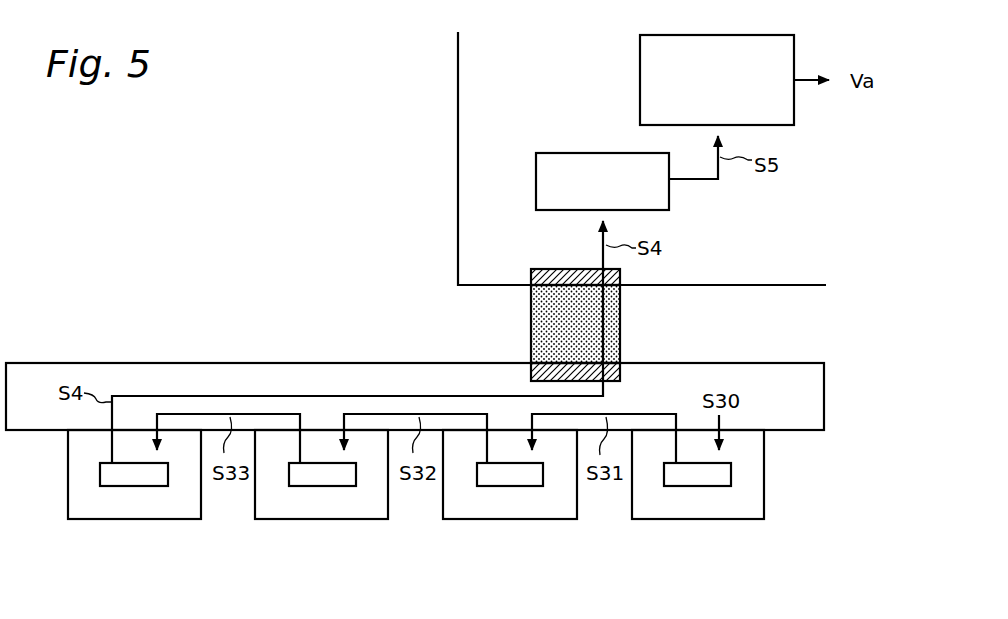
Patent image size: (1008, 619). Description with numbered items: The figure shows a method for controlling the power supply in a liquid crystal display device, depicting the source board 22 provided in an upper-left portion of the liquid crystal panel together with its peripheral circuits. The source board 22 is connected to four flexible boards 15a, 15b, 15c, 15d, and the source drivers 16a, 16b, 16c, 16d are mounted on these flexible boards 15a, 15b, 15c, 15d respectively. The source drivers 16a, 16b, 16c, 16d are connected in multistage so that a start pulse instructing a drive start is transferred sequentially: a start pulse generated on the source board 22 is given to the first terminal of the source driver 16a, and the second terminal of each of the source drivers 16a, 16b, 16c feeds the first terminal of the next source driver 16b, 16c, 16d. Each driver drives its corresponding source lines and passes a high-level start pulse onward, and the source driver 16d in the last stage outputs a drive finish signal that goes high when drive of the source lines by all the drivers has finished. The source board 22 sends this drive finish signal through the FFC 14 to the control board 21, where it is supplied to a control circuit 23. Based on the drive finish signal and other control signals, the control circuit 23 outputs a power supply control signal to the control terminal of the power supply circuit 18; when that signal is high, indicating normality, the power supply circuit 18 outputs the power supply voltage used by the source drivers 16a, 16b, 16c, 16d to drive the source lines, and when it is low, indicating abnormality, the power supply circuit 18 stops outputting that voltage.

The FFC 14 is at (530, 325).
The power supply circuit 18 is at (640, 82).
The control board 21 is at (458, 111).
The source board 22 is at (183, 363).
The control circuit 23 is at (536, 182).
The flexible board 15a is at (670, 519).
The flexible board 15b is at (483, 519).
The flexible board 15c is at (295, 519).
The flexible board 15d is at (107, 519).
The source driver 16a is at (710, 475).
The source driver 16b is at (522, 475).
The source driver 16c is at (335, 475).
The source driver 16d is at (147, 475).